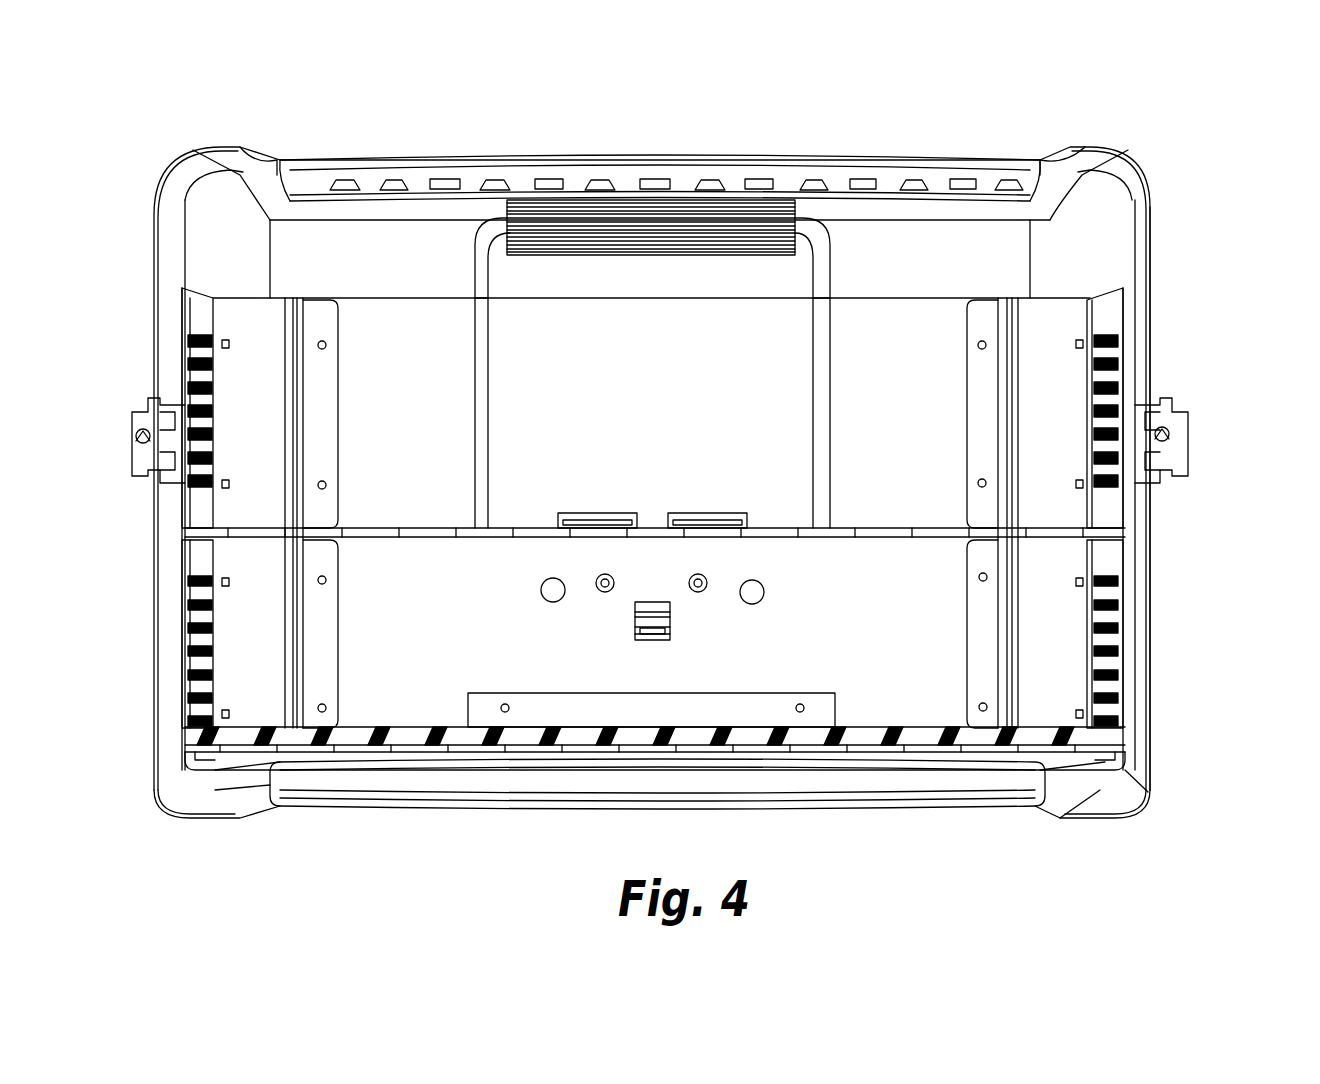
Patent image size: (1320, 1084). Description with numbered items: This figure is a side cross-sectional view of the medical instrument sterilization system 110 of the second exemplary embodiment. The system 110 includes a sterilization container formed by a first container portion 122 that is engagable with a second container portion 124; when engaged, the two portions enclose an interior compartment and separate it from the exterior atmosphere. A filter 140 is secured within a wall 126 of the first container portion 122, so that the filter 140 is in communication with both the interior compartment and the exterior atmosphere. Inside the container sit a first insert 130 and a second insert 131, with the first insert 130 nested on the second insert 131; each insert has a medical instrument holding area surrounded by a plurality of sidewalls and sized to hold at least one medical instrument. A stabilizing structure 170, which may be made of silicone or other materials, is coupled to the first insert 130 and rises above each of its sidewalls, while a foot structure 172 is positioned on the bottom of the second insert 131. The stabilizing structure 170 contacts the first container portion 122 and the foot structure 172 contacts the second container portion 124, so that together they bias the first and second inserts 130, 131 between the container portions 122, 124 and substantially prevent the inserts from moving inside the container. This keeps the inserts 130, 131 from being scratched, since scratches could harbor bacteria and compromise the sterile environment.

The medical instrument sterilization system 110 is at (299, 95).
The first container portion 122 is at (1150, 235).
The second container portion 124 is at (1153, 710).
The wall 126 is at (1003, 158).
The first insert 130 is at (1050, 402).
The second insert 131 is at (1055, 660).
The filter 140 is at (836, 182).
The stabilizing structure 170 is at (627, 230).
The foot structure 172 is at (1045, 765).